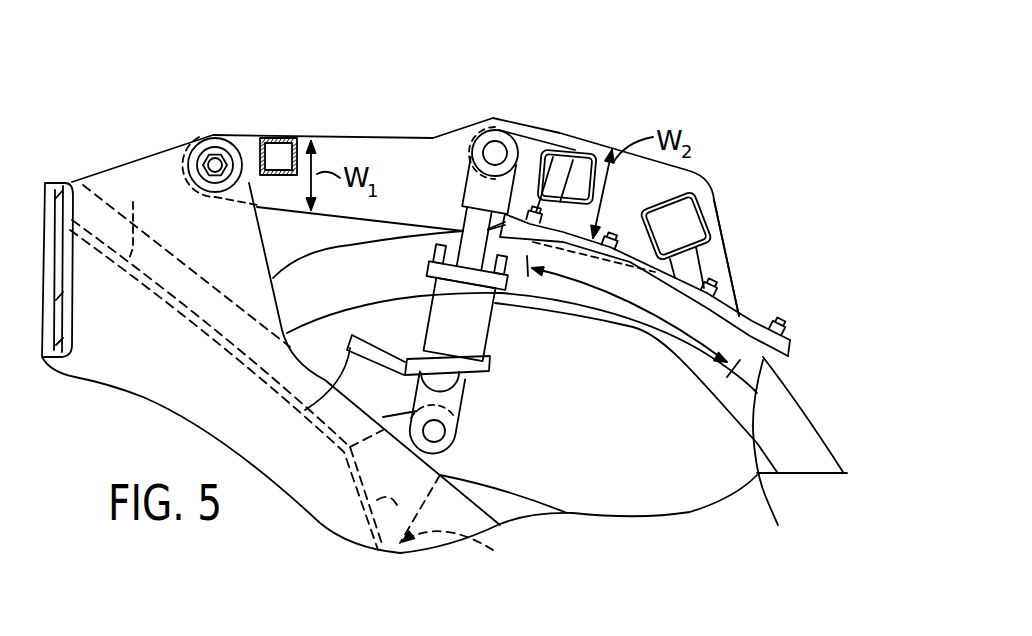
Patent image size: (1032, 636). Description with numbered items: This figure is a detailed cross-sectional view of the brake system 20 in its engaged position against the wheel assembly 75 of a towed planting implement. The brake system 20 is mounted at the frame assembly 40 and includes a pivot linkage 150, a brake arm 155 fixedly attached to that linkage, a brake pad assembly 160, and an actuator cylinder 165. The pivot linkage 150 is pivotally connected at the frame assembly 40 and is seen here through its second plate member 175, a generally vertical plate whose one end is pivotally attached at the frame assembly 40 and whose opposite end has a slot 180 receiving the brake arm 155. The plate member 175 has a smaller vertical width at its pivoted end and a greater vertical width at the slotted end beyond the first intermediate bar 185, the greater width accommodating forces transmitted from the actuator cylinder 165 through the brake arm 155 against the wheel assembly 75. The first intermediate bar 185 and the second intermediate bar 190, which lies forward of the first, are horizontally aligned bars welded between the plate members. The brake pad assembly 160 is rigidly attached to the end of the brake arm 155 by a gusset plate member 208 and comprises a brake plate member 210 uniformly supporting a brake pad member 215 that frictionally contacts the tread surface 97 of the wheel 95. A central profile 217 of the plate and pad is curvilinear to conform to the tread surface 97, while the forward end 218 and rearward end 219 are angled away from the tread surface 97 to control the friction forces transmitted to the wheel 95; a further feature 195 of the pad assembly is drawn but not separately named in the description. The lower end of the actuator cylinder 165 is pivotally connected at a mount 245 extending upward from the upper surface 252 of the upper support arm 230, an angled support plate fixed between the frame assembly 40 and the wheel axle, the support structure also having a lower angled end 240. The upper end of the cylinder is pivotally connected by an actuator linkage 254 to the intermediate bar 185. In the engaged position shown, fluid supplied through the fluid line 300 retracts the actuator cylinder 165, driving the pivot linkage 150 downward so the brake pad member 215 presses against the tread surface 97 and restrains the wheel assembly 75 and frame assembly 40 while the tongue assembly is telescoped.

The brake system 20 is at (737, 202).
The frame assembly 40 is at (67, 193).
The wheel assembly 75 is at (866, 460).
The second wheel 95 is at (780, 430).
The tread surface 97 is at (763, 358).
The pivot linkage 150 is at (313, 114).
The brake arm 155 is at (718, 237).
The brake pad assembly 160 is at (778, 457).
The actuator cylinder 165 is at (508, 362).
The second plate member 175 is at (441, 137).
The slot 180 is at (710, 205).
The first intermediate bar 185 is at (540, 150).
The second intermediate bar 190 is at (258, 142).
The pad surface 195 is at (712, 222).
The gusset plate member 208 is at (728, 282).
The brake plate member 210 is at (752, 316).
The brake pad member 215 is at (703, 333).
The central surface area or profile 217 is at (633, 308).
The forward end 218 is at (547, 220).
The rearward end 219 is at (800, 333).
The upper support arm 230 is at (186, 259).
The lower angled end 240 is at (487, 547).
The mount 245 is at (447, 443).
The upper surface 252 is at (398, 545).
The actuator linkage 254 is at (517, 125).
The fluid line 300 is at (305, 412).